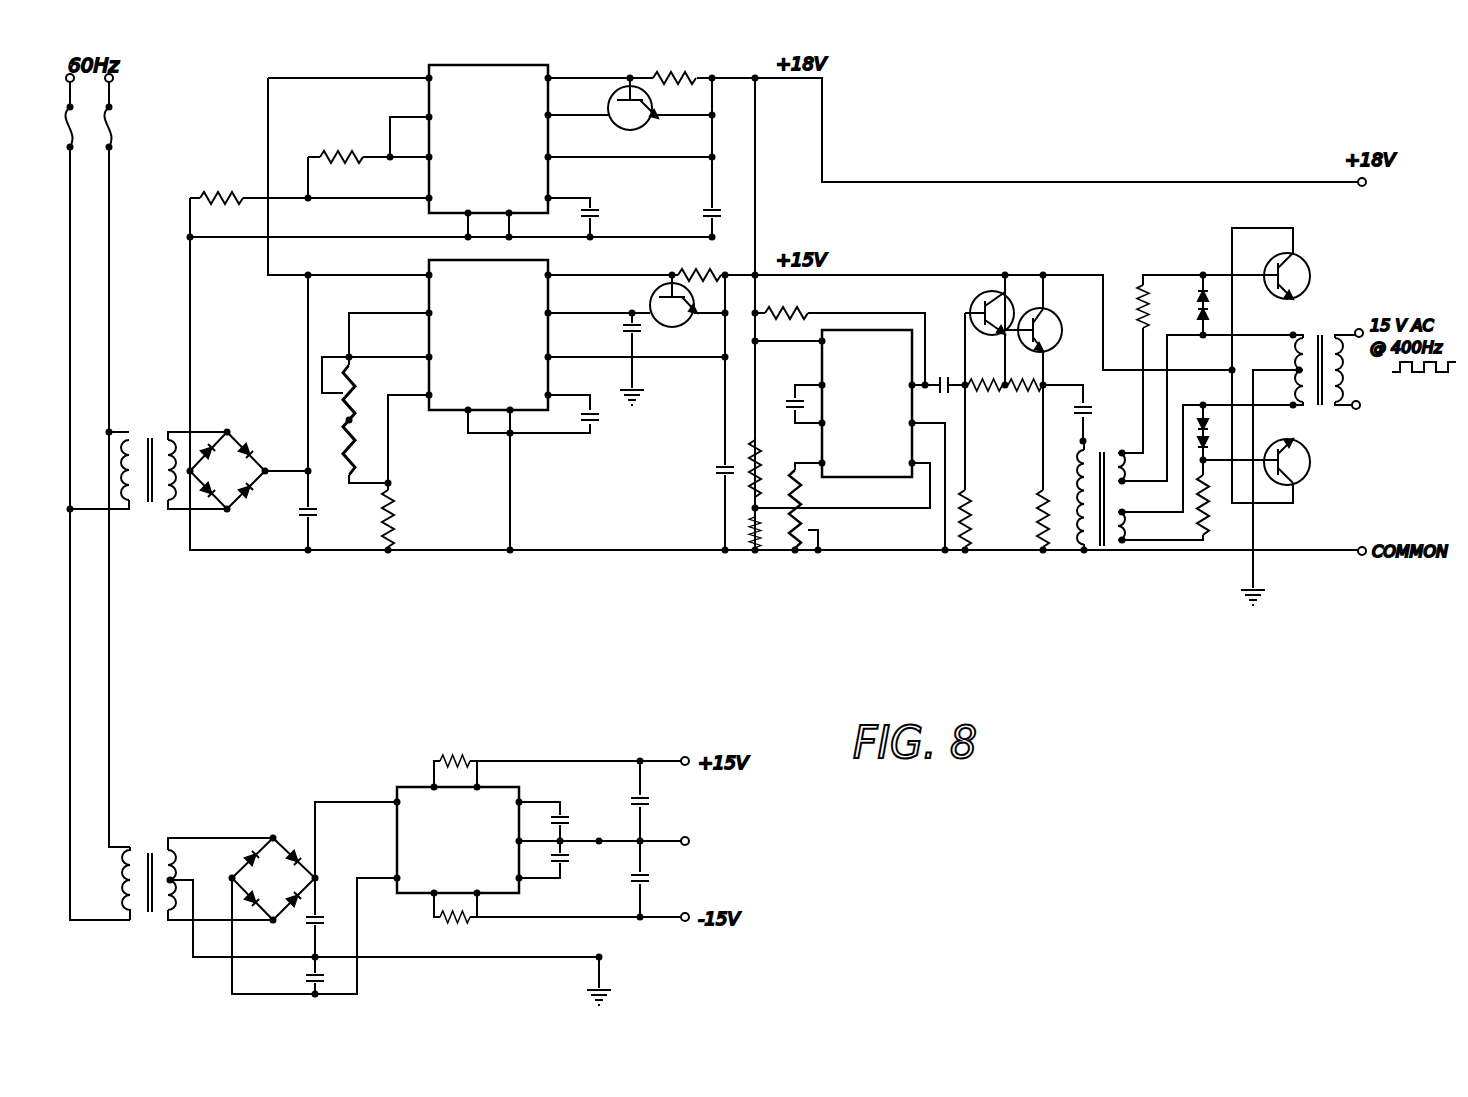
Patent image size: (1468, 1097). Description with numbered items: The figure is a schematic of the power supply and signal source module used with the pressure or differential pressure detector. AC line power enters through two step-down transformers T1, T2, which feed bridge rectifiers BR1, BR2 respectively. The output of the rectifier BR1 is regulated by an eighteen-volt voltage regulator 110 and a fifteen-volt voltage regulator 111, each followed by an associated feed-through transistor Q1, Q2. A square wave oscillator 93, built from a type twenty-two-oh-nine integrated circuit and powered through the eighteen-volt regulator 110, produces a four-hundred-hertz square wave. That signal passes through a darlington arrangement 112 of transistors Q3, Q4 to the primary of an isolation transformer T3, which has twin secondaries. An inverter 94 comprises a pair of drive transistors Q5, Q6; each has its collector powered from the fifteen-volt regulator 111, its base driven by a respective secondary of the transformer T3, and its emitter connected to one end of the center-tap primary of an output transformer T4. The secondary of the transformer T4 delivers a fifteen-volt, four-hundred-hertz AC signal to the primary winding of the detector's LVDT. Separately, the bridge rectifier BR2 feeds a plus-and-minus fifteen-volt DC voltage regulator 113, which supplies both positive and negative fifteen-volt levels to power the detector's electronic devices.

The 18-volt voltage regulator 110 is at (429, 183).
The 15-volt voltage regulator 111 is at (429, 300).
The darlington arrangement 112 is at (1020, 300).
The ±15 volt DC voltage regulator 113 is at (411, 890).
The square wave oscillator 93 is at (822, 364).
The inverter 94 is at (1257, 218).
The feed-through transistor Q1 is at (645, 127).
The feed-through transistor Q2 is at (650, 297).
The transistor Q3 is at (986, 340).
The transistor Q4 is at (1052, 345).
The drive transistor Q5 is at (1310, 270).
The drive transistor Q6 is at (1305, 472).
The step-down transformer T1 is at (149, 437).
The step-down transformer T2 is at (150, 860).
The isolation transformer T3 is at (1103, 556).
The output transformer T4 is at (1328, 405).
The bridge rectifier BR1 is at (282, 418).
The bridge rectifier BR2 is at (284, 840).